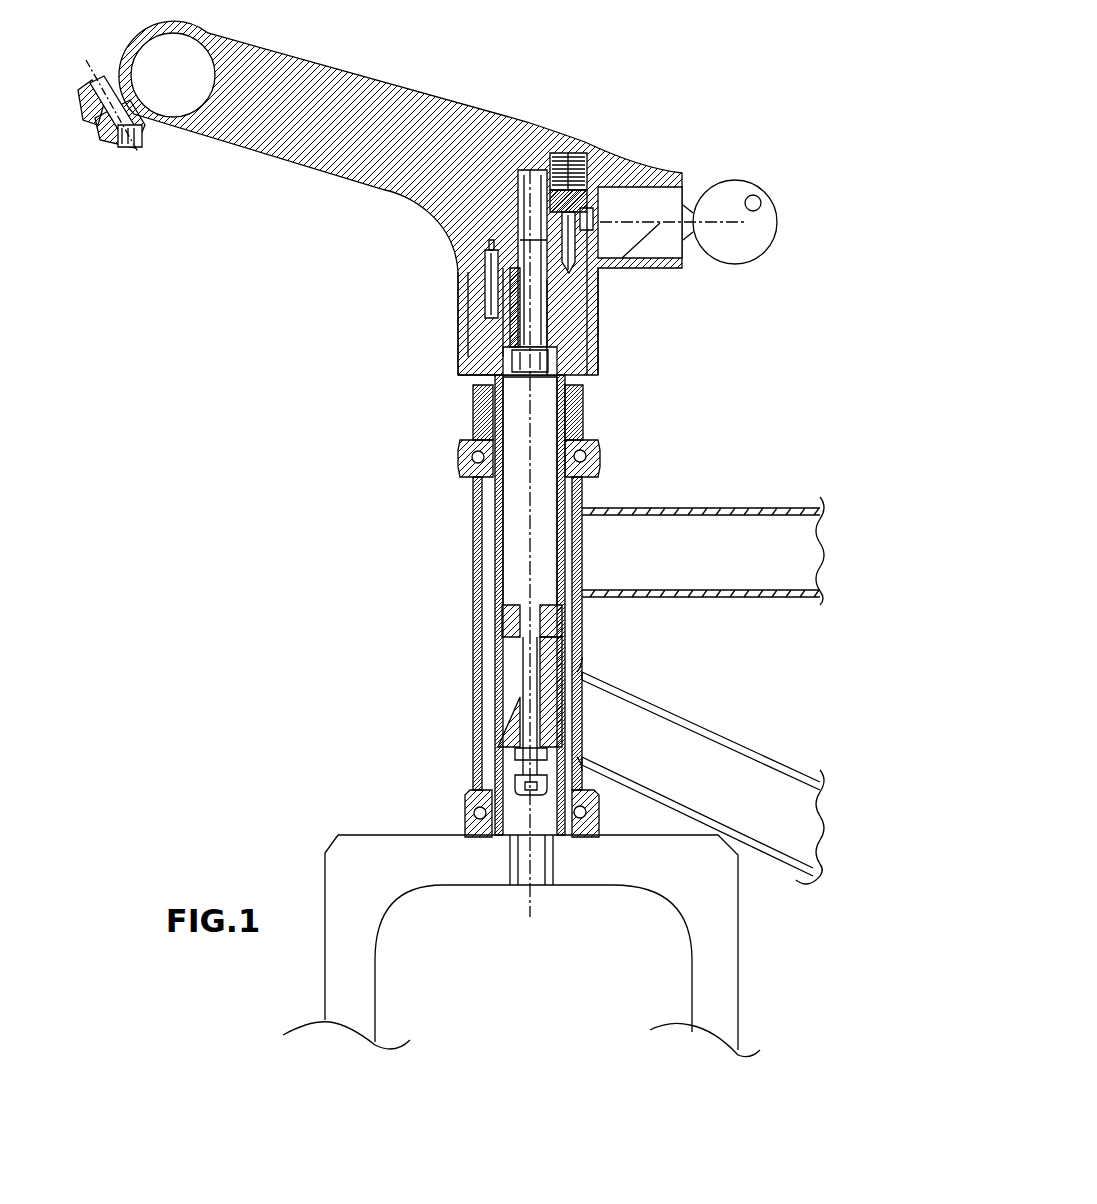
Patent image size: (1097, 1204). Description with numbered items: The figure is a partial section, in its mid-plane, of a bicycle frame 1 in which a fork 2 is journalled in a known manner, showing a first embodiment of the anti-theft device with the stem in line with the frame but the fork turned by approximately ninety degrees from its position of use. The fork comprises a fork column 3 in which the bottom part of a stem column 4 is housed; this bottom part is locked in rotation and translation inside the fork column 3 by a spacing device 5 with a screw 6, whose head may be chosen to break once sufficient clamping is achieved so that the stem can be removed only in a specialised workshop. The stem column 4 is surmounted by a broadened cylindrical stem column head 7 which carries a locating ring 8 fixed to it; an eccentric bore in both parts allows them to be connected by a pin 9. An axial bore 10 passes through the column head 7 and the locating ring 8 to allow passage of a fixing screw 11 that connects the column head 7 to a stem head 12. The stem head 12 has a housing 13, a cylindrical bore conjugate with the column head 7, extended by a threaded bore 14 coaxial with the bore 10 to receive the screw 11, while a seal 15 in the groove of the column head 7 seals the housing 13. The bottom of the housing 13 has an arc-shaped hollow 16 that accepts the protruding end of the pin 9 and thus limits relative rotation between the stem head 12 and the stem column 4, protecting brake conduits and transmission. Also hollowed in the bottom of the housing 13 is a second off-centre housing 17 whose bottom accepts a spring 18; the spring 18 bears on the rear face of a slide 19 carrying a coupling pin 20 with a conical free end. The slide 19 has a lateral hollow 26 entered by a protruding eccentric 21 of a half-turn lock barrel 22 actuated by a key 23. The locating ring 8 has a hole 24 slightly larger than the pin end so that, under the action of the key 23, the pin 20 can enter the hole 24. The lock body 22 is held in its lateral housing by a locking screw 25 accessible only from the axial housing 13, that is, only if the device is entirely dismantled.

The bicycle frame 1 is at (664, 597).
The fork 2 is at (375, 982).
The fork column 3 is at (493, 580).
The stem column 4 is at (495, 662).
The spacing device 5 is at (512, 723).
The screw 6 is at (520, 767).
The stem column head 7 is at (572, 378).
The locating ring 8 is at (467, 276).
The pin 9 is at (457, 284).
The axial bore 10 is at (578, 384).
The fixing screw 11 is at (457, 374).
The stem head 12 is at (253, 135).
The housing 13 is at (466, 387).
The threaded bore 14 is at (517, 187).
The seal 15 is at (457, 344).
The hollow 16 is at (487, 251).
The second off-centre housing 17 is at (545, 157).
The spring 18 is at (587, 137).
The slide 19 is at (600, 147).
The coupling pin 20 is at (600, 303).
The eccentric 21 is at (593, 197).
The half-turn lock barrel 22 is at (640, 202).
The key 23 is at (737, 247).
The hole 24 is at (600, 341).
The locking screw 25 is at (577, 278).
The lateral hollow 26 is at (590, 236).